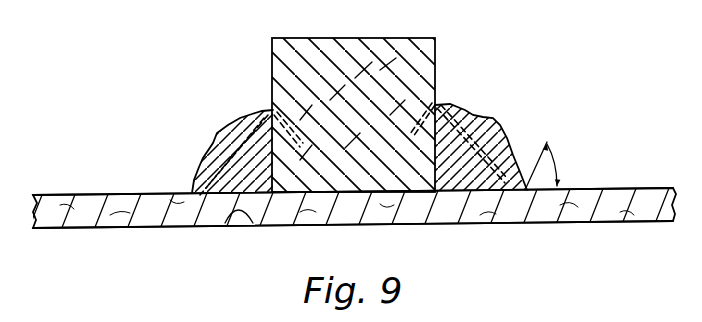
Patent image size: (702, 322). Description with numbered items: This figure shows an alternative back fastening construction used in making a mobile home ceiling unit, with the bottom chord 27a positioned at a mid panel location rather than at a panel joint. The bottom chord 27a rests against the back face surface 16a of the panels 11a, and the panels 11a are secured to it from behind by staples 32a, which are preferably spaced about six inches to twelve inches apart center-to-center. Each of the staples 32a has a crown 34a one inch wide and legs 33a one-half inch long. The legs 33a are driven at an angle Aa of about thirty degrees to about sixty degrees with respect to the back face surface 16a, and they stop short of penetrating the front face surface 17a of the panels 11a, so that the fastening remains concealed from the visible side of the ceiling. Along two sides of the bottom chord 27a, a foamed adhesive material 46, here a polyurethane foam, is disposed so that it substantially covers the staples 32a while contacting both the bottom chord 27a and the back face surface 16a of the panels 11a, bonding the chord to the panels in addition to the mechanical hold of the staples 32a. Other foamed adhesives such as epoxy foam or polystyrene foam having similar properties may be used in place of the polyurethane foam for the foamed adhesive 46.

The bottom chord 27a is at (413, 77).
The foamed adhesive material 46 is at (247, 125).
The crown 34a is at (218, 178).
The staples 32a is at (232, 157).
The panels 11a is at (588, 207).
The back face surface 16a is at (600, 187).
The front face surface 17a is at (612, 222).
The legs 33a is at (290, 143).
The contact angle Aa is at (555, 166).